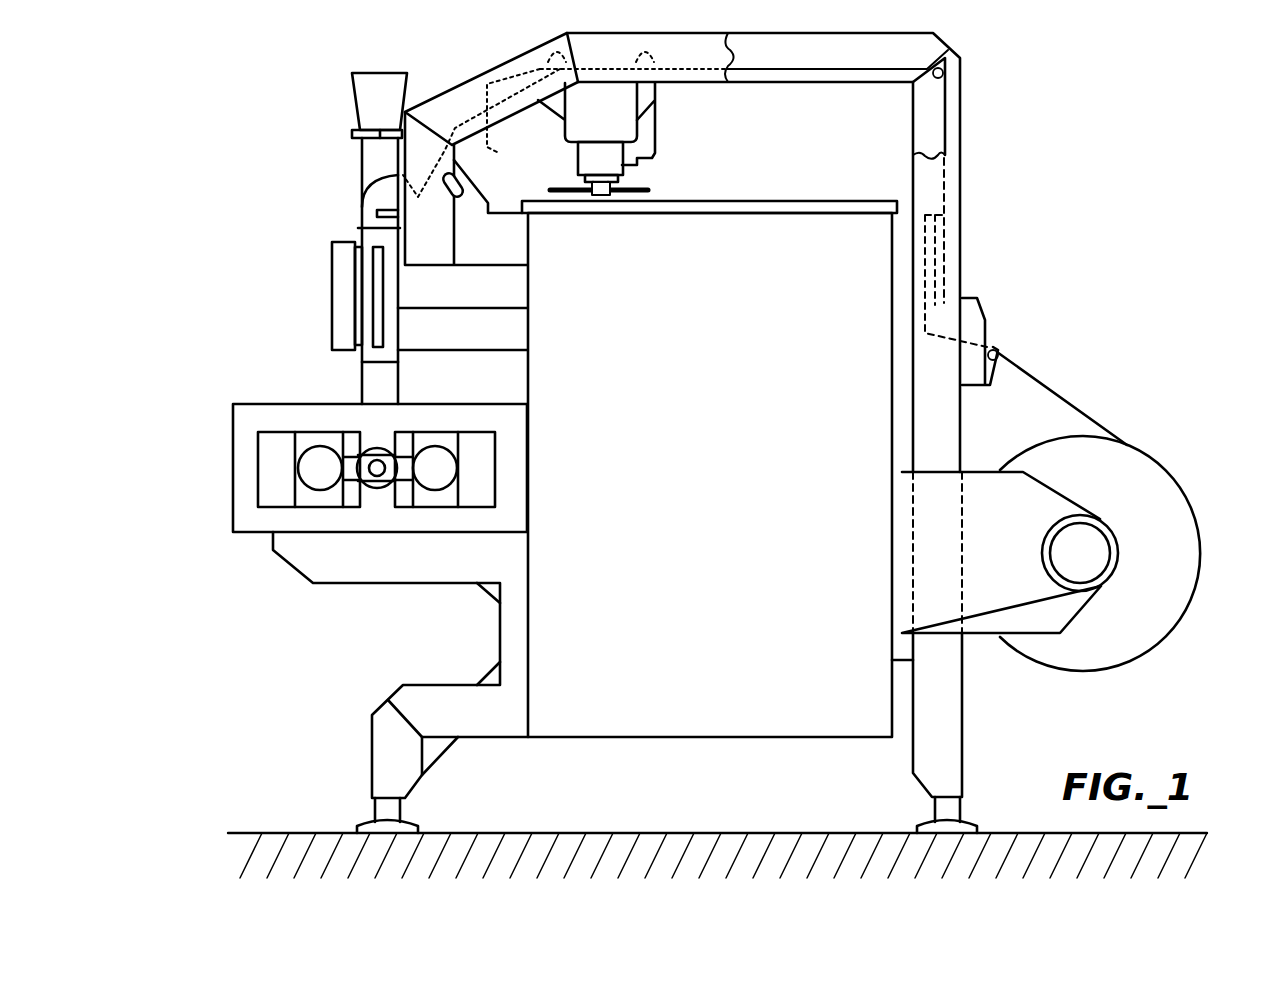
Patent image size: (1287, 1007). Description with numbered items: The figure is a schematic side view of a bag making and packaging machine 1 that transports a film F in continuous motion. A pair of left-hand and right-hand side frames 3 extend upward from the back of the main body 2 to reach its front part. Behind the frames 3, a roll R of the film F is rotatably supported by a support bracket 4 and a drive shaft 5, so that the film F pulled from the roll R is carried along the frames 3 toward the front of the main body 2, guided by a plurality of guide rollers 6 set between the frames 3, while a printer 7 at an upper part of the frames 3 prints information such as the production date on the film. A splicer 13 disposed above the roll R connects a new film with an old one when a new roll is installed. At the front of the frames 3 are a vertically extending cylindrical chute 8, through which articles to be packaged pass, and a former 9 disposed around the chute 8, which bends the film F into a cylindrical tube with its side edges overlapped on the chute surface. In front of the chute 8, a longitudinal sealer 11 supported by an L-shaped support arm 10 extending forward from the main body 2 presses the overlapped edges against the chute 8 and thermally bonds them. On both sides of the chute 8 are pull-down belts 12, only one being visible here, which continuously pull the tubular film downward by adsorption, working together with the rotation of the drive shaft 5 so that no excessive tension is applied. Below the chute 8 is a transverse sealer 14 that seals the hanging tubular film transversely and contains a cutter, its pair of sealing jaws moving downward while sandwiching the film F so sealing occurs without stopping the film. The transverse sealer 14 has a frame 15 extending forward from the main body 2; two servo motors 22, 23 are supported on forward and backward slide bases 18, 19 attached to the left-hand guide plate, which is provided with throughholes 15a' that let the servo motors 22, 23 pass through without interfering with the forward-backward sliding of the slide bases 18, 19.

The bag making and packaging machine 1 is at (250, 124).
The main body 2 is at (795, 222).
The frames 3 is at (953, 120).
The support bracket 4 is at (977, 493).
The drive shaft 5 is at (1093, 560).
The guide rollers 6 is at (460, 145).
The printer 7 is at (622, 128).
The cylindrical chute 8 is at (390, 297).
The former 9 is at (380, 183).
The L-shaped support arm 10 is at (452, 302).
The longitudinal sealer 11 is at (340, 280).
The pull-down belts 12 is at (378, 327).
The splicer 13 is at (972, 320).
The transverse sealer 14 is at (228, 418).
The frame 15 is at (248, 473).
The throughholes 15a' is at (396, 496).
The forward slide base 18 is at (328, 495).
The backward slide base 19 is at (443, 497).
The servo motor 22 is at (320, 452).
The servo motor 23 is at (435, 480).
The film F is at (1073, 402).
The roll R is at (1153, 485).